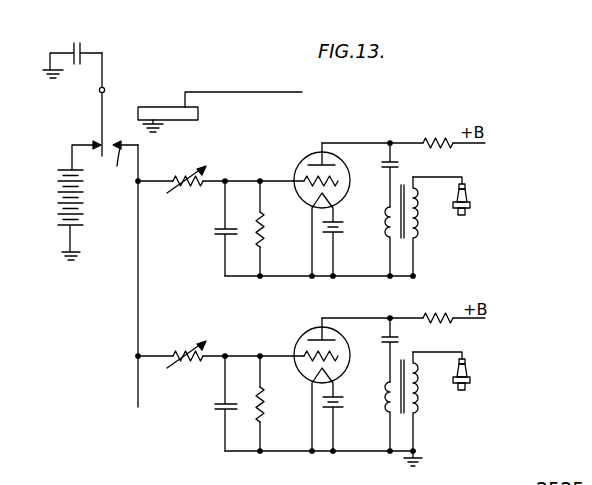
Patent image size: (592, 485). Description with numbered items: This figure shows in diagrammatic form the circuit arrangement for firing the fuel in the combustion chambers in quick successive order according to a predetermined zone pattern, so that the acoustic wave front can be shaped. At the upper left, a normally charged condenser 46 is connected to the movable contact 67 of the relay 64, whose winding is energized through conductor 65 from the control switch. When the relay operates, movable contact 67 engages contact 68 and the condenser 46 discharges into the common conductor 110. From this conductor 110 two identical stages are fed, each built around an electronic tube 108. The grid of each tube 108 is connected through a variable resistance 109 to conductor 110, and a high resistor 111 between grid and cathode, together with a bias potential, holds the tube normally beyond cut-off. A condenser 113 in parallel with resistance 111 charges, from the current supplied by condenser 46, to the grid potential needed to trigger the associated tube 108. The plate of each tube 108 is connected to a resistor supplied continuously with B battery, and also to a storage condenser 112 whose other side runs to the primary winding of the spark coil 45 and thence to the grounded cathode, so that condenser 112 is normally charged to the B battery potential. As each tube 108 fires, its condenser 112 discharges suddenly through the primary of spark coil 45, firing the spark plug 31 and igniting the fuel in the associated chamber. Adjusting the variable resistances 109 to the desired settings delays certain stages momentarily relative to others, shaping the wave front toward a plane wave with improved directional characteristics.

The spark plug 31 is at (470, 205).
The spark coil 45 is at (398, 200).
The normally charged condenser 46 is at (81, 46).
The second relay 64 is at (172, 106).
The conductor 65 is at (242, 92).
The movable contact 67 is at (100, 124).
The contact 68 is at (92, 200).
The electronic tube 108 is at (300, 164).
The variable resistance 109 is at (175, 173).
The conductor 110 is at (138, 280).
The high resistor 111 is at (262, 248).
The storage condenser 112 is at (399, 164).
The condenser 113 is at (223, 238).